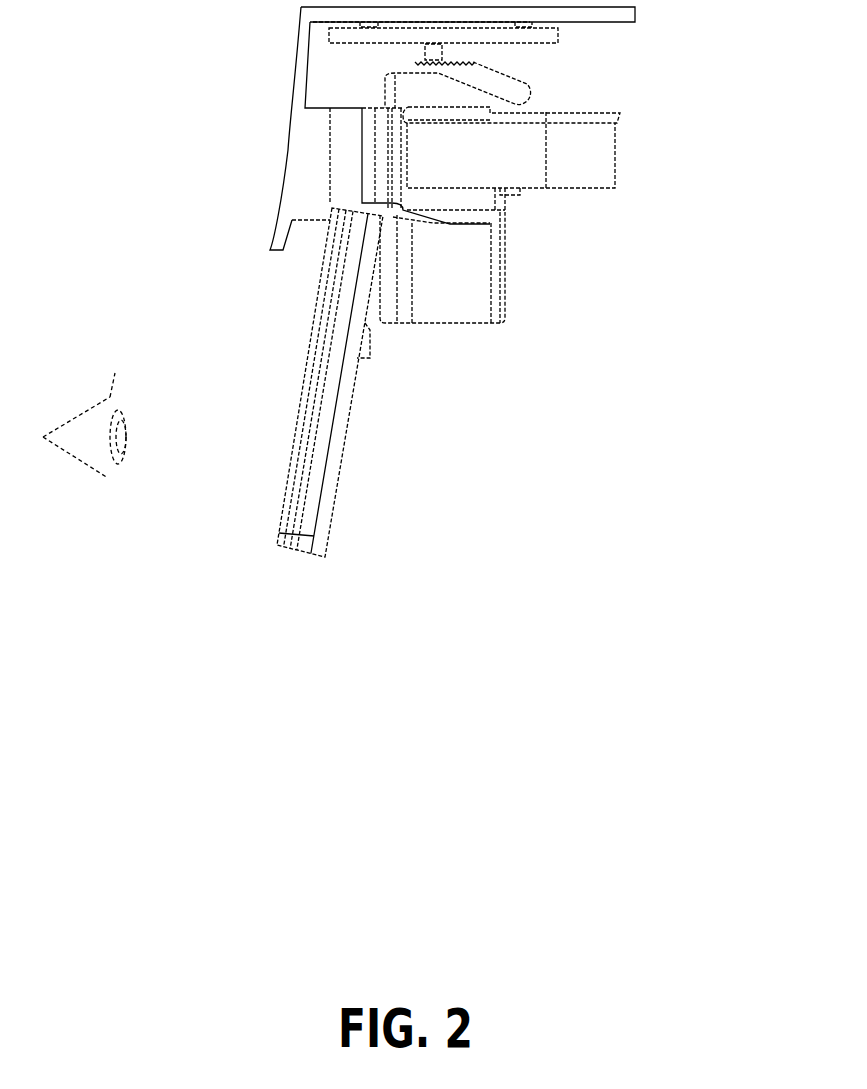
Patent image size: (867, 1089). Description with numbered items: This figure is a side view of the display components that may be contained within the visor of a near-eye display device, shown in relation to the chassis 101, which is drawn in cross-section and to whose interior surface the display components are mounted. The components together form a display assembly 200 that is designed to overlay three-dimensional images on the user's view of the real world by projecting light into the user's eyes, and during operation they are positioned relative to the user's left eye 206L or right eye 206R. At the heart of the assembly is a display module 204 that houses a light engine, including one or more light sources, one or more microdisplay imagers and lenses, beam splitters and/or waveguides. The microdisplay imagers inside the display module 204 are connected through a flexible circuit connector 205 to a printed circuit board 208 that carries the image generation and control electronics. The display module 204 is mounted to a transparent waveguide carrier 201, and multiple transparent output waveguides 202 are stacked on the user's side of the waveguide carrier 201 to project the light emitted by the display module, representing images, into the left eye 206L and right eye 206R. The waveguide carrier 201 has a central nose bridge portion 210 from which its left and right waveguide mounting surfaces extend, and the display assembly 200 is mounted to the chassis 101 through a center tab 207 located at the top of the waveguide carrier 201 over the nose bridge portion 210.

The chassis 101 is at (288, 150).
The display assembly 200 is at (653, 104).
The transparent waveguide carrier 201 is at (330, 523).
The transparent output waveguides 202 is at (297, 456).
The display module 204 is at (528, 247).
The flexible circuit connector 205 is at (533, 98).
The left eye 206L is at (140, 395).
The right eye 206R is at (123, 423).
The center tab 207 is at (330, 190).
The printed circuit board 208 is at (350, 43).
The central nose bridge portion 210 is at (373, 343).